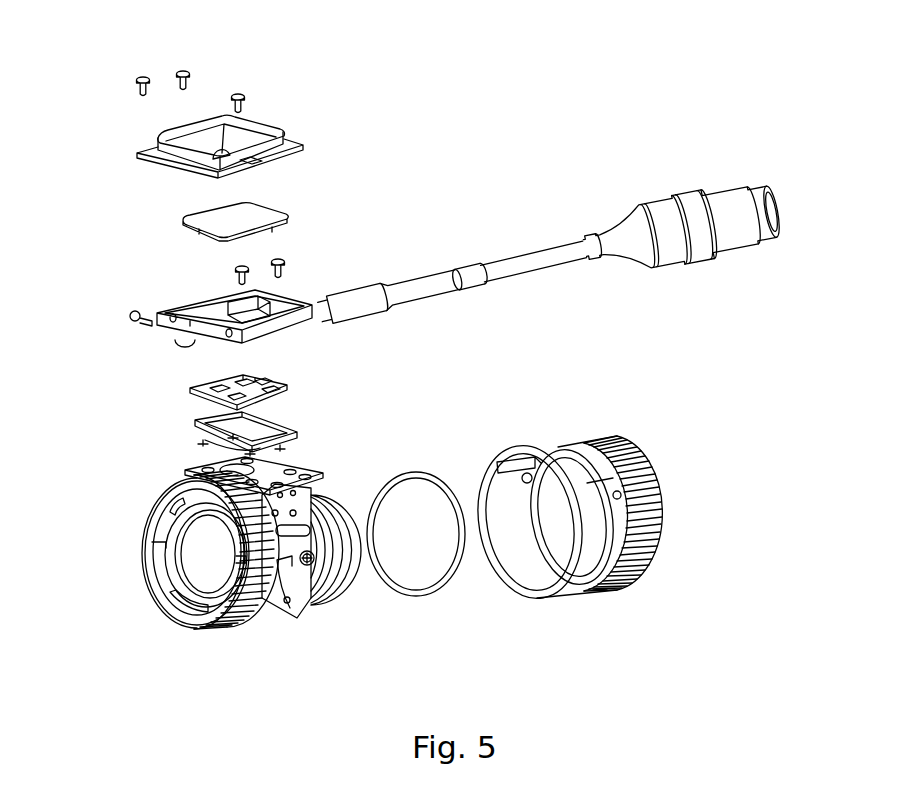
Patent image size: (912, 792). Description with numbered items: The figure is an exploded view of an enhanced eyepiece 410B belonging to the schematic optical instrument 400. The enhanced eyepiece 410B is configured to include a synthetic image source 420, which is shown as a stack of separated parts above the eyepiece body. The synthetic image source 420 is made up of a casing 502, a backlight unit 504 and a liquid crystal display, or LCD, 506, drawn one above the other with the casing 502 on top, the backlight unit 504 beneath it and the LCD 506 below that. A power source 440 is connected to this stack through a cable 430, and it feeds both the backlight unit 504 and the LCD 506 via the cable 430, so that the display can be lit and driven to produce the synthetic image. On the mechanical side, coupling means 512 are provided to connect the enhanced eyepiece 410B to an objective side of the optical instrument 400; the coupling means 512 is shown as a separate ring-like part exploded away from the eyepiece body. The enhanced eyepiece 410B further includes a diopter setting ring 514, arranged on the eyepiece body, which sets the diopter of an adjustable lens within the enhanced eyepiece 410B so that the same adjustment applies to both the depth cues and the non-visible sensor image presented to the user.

The schematic optical instrument 400 is at (97, 77).
The synthetic image source 420 is at (122, 72).
The casing 502 is at (303, 147).
The backlight unit 504 is at (293, 217).
The liquid crystal display (LCD) 506 is at (288, 387).
The cable 430 is at (508, 262).
The power source 440 is at (725, 192).
The enhanced eyepiece 410B is at (192, 644).
The diopter setting ring 514 is at (285, 562).
The coupling means 512 is at (518, 462).